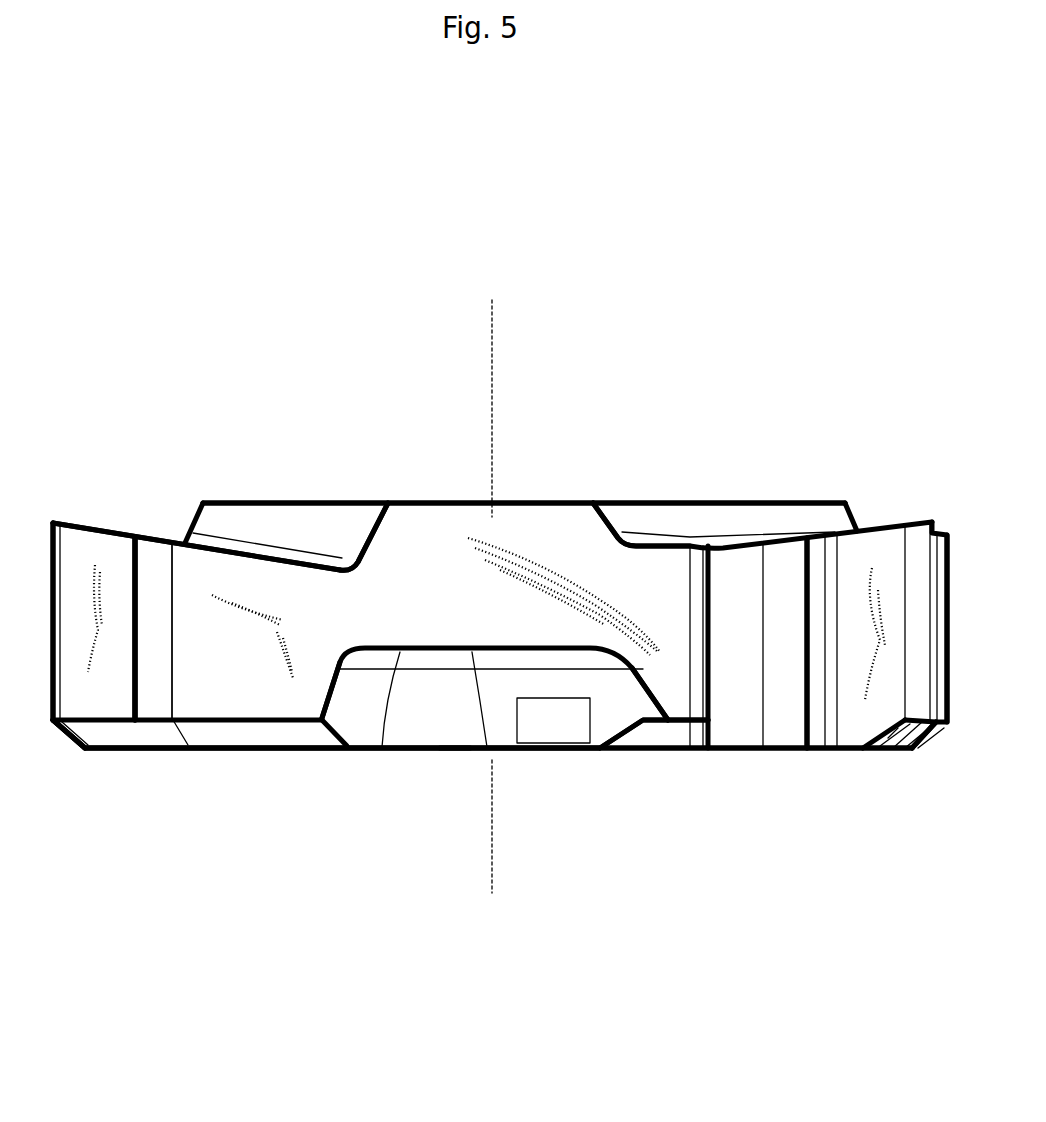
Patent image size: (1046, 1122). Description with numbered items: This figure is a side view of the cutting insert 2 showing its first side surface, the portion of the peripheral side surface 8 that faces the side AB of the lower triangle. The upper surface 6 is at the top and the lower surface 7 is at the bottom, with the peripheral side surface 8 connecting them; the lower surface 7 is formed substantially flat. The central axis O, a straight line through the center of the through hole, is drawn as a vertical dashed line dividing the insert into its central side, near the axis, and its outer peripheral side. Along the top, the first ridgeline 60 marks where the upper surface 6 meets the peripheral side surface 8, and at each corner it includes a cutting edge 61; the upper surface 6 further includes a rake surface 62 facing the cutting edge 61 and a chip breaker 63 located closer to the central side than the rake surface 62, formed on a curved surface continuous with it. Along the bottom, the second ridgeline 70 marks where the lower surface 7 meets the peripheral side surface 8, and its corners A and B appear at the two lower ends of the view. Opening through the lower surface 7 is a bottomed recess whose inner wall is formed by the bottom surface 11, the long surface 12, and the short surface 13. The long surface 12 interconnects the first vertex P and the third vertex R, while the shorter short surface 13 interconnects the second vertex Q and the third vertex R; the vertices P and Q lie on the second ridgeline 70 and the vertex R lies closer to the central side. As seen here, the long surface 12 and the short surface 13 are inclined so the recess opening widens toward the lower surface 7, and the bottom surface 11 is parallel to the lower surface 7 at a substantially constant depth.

The cutting insert 2 is at (500, 658).
The upper surface 6 is at (293, 502).
The lower surface 7 is at (283, 750).
The peripheral side surface 8 is at (246, 655).
The bottom surface 11 is at (443, 657).
The long surface 12 is at (597, 749).
The short surface 13 is at (372, 722).
The first ridgeline 60 is at (160, 538).
The cutting edge 61 is at (55, 522).
The rake surface 62 is at (97, 523).
The chip breaker 63 is at (340, 532).
The second ridgeline 70 is at (140, 750).
The corner A is at (56, 725).
The corner B is at (938, 748).
The central axis O is at (493, 577).
The first vertex P is at (667, 722).
The second vertex Q is at (318, 725).
The third vertex R is at (455, 750).